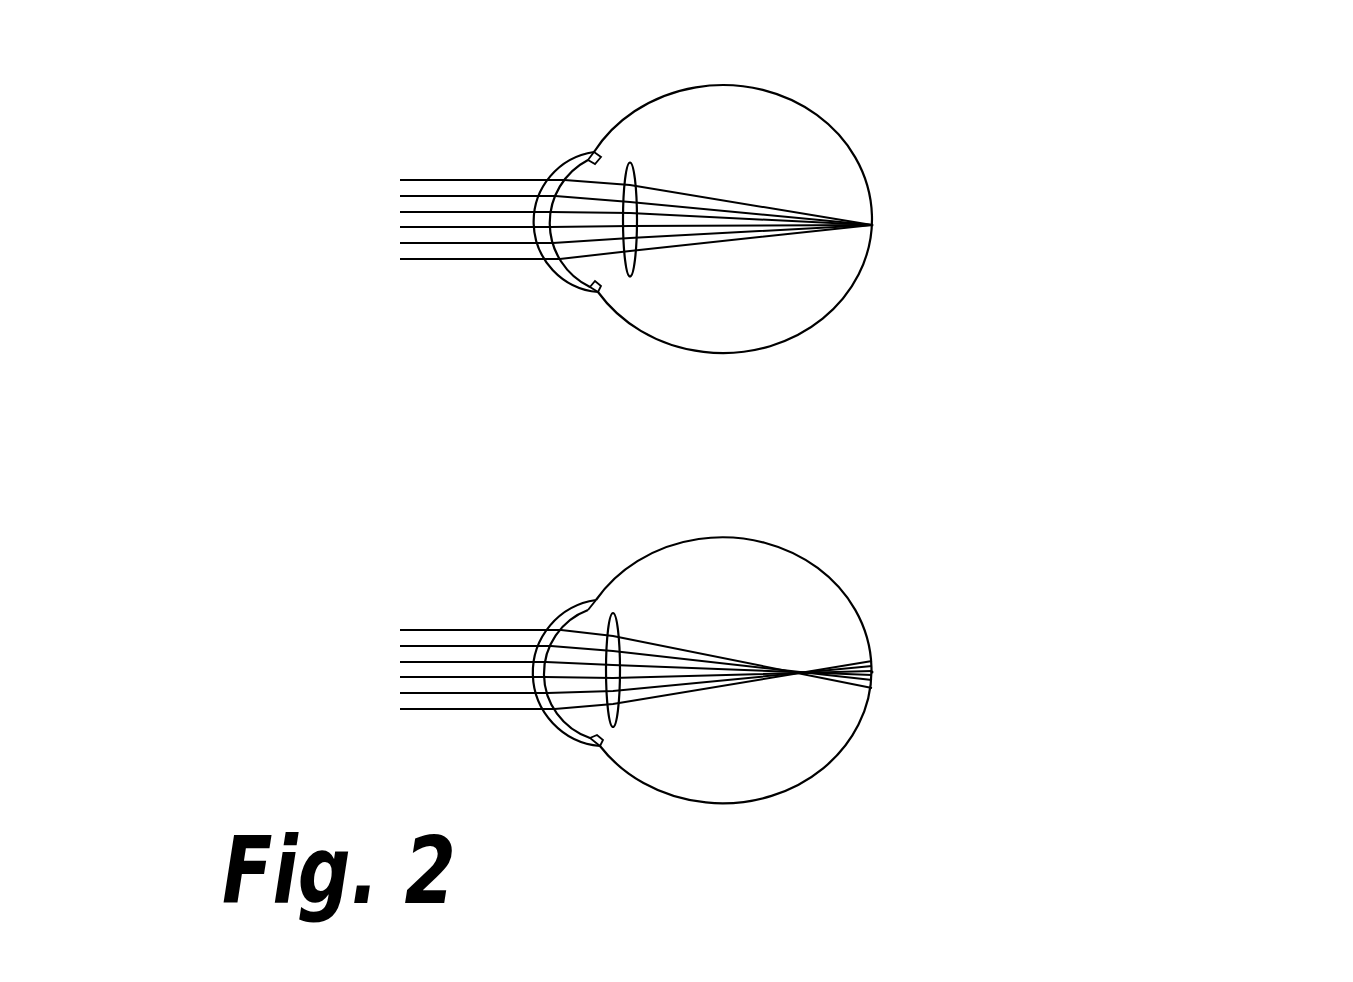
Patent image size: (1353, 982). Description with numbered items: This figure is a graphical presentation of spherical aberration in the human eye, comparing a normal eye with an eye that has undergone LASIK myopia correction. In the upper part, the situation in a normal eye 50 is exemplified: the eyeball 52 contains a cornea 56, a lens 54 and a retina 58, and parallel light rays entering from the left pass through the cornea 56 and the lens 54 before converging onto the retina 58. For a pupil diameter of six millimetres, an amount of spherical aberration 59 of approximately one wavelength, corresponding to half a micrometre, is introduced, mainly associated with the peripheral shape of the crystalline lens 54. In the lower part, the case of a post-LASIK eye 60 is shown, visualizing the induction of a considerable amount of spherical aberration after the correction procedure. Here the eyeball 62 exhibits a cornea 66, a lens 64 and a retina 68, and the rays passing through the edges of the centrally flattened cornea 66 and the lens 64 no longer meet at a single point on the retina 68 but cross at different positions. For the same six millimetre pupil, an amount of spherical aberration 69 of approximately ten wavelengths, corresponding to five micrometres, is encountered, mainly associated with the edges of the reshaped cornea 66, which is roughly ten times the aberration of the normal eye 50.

The normal eye 50 is at (213, 180).
The eyeball 52 is at (723, 85).
The lens 54 is at (630, 163).
The cornea 56 is at (568, 157).
The retina 58 is at (874, 226).
The spherical aberration 59 is at (1063, 392).
The post-LASIK eye 60 is at (208, 630).
The eyeball 62 is at (723, 537).
The lens 64 is at (613, 623).
The cornea 66 is at (560, 608).
The retina 68 is at (875, 672).
The spherical aberration 69 is at (1062, 837).